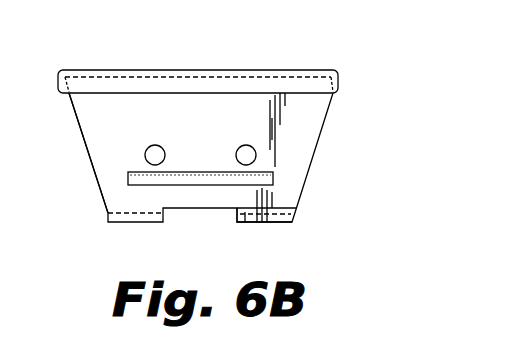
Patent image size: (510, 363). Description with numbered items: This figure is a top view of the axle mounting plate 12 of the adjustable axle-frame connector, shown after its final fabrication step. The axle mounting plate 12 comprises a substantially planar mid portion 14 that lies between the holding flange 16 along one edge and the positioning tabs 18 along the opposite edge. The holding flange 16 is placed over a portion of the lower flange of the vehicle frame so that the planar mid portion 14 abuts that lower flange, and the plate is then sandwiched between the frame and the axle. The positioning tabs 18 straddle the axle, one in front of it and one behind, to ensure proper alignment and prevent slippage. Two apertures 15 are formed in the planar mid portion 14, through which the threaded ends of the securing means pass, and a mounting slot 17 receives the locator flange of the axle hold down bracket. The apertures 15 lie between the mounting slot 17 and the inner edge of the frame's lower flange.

The axle mounting plate 12 is at (216, 128).
The substantially planar mid portion 14 is at (105, 160).
The apertures 15 is at (257, 153).
The holding flange 16 is at (222, 84).
The mounting slot 17 is at (140, 179).
The positioning tabs 18 is at (288, 223).